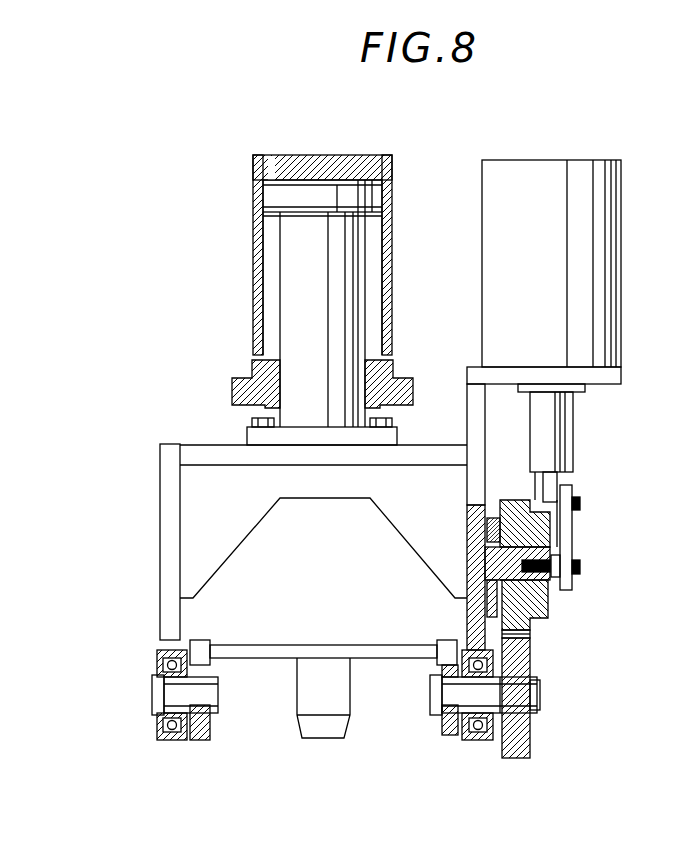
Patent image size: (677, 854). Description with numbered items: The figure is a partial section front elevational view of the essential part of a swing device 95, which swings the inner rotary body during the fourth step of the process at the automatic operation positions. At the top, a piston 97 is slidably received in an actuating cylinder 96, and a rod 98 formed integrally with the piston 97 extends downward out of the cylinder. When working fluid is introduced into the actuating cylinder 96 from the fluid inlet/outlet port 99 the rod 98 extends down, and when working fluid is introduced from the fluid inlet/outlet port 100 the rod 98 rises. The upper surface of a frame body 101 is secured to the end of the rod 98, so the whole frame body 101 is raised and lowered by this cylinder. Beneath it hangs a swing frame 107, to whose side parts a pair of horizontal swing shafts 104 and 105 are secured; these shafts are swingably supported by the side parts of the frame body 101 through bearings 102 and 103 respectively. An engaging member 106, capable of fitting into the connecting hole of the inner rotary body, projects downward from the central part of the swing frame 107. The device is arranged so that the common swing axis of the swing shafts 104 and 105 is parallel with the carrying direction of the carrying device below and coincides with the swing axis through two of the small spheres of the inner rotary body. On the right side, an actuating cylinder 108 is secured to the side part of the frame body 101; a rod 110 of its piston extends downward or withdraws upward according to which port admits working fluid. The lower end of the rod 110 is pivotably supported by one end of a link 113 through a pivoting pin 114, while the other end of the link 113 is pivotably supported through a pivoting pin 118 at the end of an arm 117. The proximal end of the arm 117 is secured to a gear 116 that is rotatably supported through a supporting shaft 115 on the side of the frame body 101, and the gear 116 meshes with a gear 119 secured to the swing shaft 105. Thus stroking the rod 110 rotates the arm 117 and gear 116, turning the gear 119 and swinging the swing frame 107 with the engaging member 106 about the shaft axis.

The swing device 95 is at (243, 317).
The actuating cylinder 96 is at (256, 272).
The piston 97 is at (374, 198).
The rod 98 is at (357, 277).
The fluid inlet/outlet port 99 is at (271, 160).
The fluid inlet/outlet port 100 is at (239, 374).
The frame body 101 is at (210, 450).
The bearing 102 is at (174, 740).
The bearing 103 is at (476, 732).
The horizontal swing shaft 104 is at (153, 694).
The horizontal swing shaft 105 is at (443, 694).
The engaging member 106 is at (300, 693).
The swing frame 107 is at (366, 650).
The actuating cylinder 108 is at (611, 262).
The rod 110 is at (565, 434).
The link 113 is at (566, 537).
The pivoting pin 114 is at (580, 504).
The supporting shaft 115 is at (468, 556).
The gear 116 is at (528, 622).
The arm 117 is at (549, 580).
The pivoting pin 118 is at (580, 567).
The gear 119 is at (524, 726).